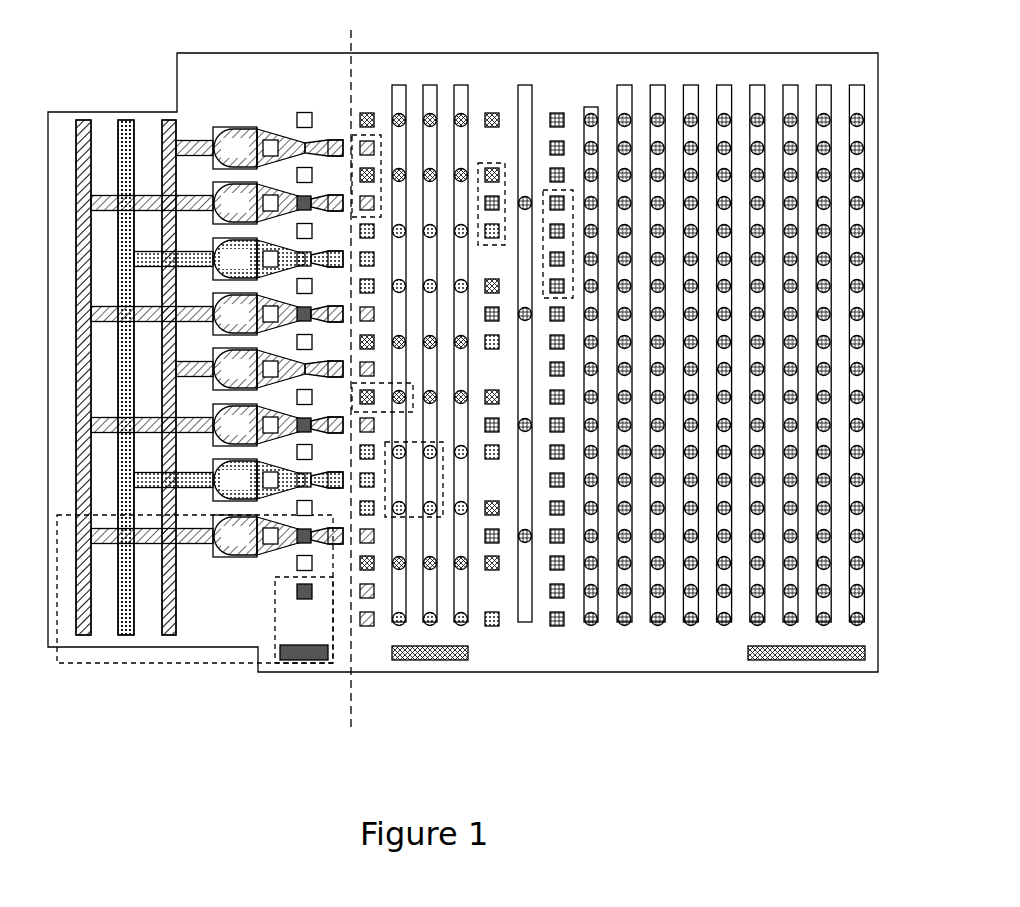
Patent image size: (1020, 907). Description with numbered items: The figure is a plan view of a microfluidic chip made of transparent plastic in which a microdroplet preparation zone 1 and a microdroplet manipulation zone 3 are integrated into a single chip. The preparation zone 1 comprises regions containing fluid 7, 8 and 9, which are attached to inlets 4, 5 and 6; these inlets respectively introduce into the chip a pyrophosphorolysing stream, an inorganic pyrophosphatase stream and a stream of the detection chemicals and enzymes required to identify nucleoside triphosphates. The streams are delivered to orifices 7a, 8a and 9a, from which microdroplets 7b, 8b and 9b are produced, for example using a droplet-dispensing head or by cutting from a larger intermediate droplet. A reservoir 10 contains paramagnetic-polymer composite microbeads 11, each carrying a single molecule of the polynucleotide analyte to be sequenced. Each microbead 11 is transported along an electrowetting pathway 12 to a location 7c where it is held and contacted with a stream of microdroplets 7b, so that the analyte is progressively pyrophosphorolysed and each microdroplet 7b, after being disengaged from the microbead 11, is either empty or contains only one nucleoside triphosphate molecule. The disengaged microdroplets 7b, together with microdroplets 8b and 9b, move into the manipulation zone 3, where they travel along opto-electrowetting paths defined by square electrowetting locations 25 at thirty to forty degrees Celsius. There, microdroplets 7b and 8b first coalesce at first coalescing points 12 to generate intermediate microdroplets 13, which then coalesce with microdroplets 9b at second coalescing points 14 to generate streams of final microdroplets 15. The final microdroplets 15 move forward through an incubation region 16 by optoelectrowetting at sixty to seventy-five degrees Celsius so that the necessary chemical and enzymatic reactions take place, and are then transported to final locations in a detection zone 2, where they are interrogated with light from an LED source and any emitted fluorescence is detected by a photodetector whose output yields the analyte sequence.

The microdroplet preparation zone 1 is at (48, 40).
The detection zone 2 is at (878, 328).
The microdroplet manipulation zone 3 is at (356, 42).
The inlet 4 is at (83, 112).
The inlet 5 is at (126, 112).
The inlet 6 is at (169, 112).
The region containing fluid 7 is at (83, 634).
The orifice 7a is at (259, 369).
The microdroplet 7b is at (341, 212).
The location 7c is at (311, 199).
The region containing fluid 8 is at (168, 634).
The orifice 8a is at (259, 258).
The microdroplet 8b is at (336, 139).
The region containing fluid 9 is at (126, 634).
The orifice 9a is at (259, 369).
The microdroplet 9b is at (341, 489).
The reservoir 10 is at (287, 662).
The paramagnetic-polymer composite microbead 11 is at (301, 600).
The electrowetting pathway / first coalescing point 12 is at (351, 600).
The intermediate microdroplet 13 is at (433, 172).
The second coalescing point 14 is at (497, 200).
The final microdroplet 15 is at (729, 257).
The incubation region 16 is at (542, 685).
The square electrowetting location 25 is at (562, 447).